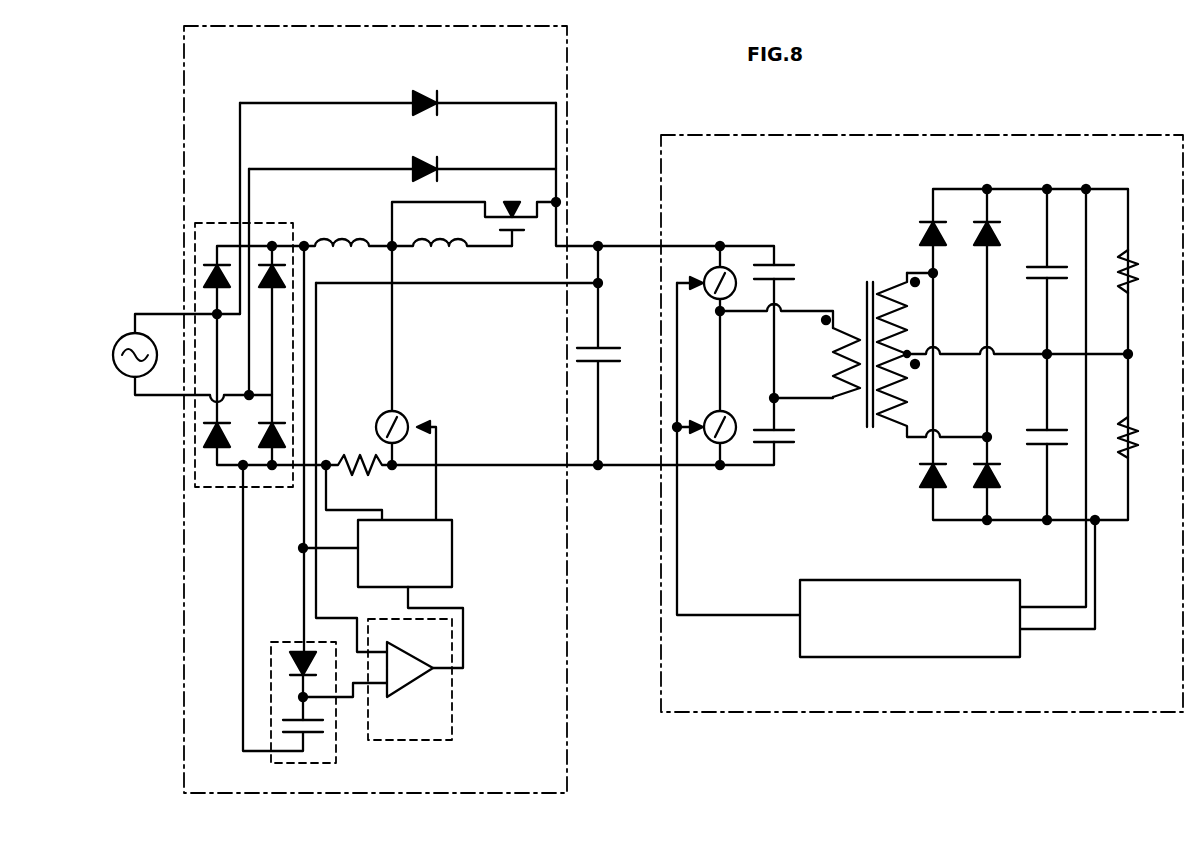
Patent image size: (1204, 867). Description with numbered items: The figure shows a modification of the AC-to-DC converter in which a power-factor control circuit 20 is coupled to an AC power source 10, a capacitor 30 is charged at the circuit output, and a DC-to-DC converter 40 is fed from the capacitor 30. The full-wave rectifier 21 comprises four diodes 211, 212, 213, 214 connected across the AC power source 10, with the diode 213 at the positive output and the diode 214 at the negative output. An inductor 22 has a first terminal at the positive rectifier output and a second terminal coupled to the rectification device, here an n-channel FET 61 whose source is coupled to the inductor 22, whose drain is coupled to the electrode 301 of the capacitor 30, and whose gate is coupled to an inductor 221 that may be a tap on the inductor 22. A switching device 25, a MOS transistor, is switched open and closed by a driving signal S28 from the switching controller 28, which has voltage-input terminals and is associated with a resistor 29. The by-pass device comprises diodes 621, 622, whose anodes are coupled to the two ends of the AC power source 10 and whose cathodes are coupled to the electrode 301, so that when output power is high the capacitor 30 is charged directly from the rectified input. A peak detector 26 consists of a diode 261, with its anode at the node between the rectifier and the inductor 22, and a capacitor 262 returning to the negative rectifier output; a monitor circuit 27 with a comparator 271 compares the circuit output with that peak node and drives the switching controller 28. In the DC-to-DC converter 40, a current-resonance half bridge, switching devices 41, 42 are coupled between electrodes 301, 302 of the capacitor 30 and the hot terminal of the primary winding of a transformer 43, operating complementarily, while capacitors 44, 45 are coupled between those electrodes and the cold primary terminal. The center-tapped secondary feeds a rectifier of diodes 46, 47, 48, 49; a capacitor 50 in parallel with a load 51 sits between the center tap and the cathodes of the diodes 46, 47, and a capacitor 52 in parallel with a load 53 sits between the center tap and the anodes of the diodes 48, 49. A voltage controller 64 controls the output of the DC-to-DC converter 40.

The AC power source 10 is at (112, 351).
The power-factor control circuit 20 is at (568, 108).
The full-wave rectifier 21 is at (244, 295).
The diode 211 is at (207, 277).
The diode 212 is at (207, 435).
The diode 213 is at (284, 273).
The diode 214 is at (285, 430).
The inductor 22 is at (318, 240).
The inductor 221 is at (440, 250).
The FET 61 is at (518, 238).
The diode 621 is at (422, 157).
The diode 622 is at (422, 92).
The switching device 25 is at (405, 415).
The peak detector 26 is at (290, 621).
The diode 261 is at (291, 671).
The capacitor 262 is at (290, 732).
The monitor circuit 27 is at (410, 703).
The comparator 271 is at (404, 660).
The switching controller 28 is at (443, 516).
The driving signal S28 is at (393, 490).
The resistor 29 is at (352, 458).
The capacitor 30 is at (608, 348).
The electrode 301 is at (600, 291).
The electrode 302 is at (600, 420).
The DC-to-DC converter 40 is at (1105, 135).
The switching device 41 is at (720, 300).
The switching device 42 is at (721, 412).
The transformer 43 is at (884, 276).
The capacitor 44 is at (778, 261).
The capacitor 45 is at (778, 453).
The diode 46 is at (923, 232).
The diode 47 is at (998, 232).
The diode 48 is at (925, 492).
The diode 49 is at (990, 492).
The capacitor 50 is at (1050, 262).
The load 51 is at (1133, 262).
The capacitor 52 is at (1050, 426).
The load 53 is at (1133, 425).
The voltage controller 64 is at (960, 657).